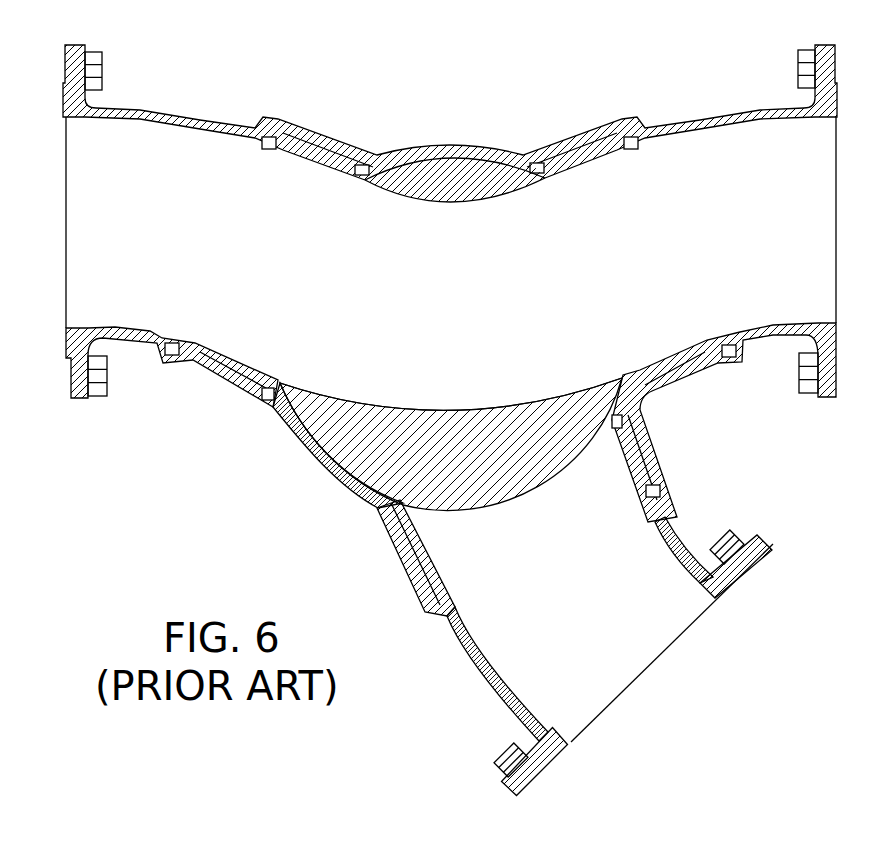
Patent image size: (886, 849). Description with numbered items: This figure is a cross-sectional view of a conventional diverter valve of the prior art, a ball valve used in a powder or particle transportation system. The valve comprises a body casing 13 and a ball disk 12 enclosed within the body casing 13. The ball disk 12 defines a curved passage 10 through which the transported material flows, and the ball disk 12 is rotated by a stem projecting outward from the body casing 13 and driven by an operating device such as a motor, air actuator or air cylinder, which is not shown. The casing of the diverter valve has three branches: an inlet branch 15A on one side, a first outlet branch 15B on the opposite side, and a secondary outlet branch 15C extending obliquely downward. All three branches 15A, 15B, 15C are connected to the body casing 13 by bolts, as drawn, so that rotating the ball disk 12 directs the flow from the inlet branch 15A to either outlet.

The curved passage 10 is at (547, 400).
The ball disk 12 is at (542, 463).
The body casing 13 is at (422, 150).
The inlet branch 15A is at (165, 115).
The first outlet branch 15B is at (722, 117).
The secondary outlet branch 15C is at (678, 547).